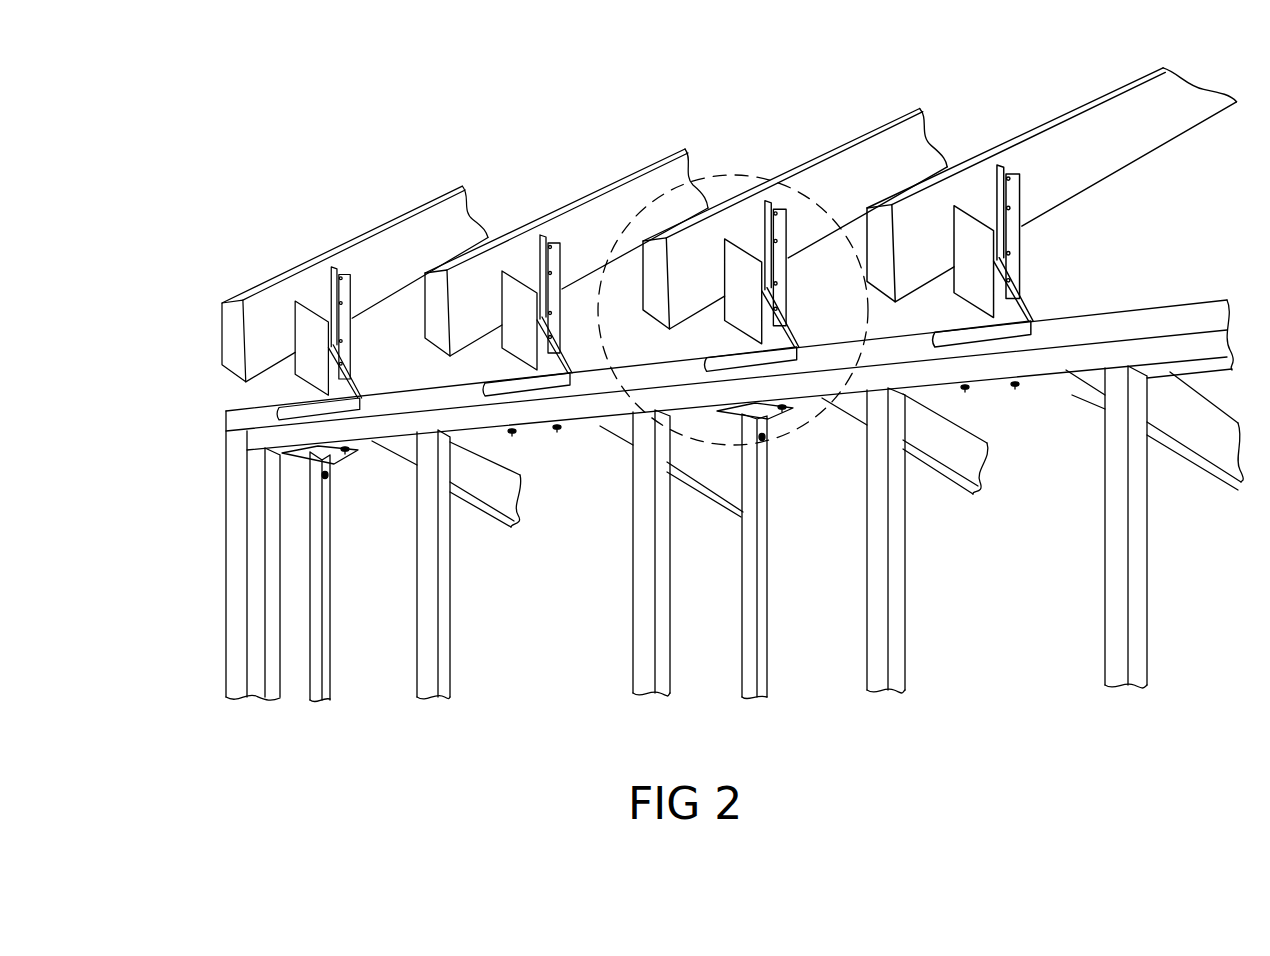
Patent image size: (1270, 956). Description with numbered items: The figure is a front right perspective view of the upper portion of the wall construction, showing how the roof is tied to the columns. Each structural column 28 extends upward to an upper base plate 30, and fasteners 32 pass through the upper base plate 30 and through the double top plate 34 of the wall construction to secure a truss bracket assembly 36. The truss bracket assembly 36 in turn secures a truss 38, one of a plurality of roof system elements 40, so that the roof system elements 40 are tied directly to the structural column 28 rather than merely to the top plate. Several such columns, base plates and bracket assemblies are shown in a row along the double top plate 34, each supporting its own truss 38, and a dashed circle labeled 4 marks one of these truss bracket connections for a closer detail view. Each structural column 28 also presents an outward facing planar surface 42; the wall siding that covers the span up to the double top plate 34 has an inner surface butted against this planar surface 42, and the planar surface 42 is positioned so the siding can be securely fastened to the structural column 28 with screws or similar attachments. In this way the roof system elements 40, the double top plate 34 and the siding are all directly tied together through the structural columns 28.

The detail view circle (FIG. 4) 4 is at (630, 195).
The structural column 28 is at (327, 577).
The upper base plate 30 is at (318, 447).
The fasteners 32 is at (329, 477).
The double top plate 34 is at (240, 425).
The truss bracket assembly 36 is at (330, 376).
The truss 38 is at (230, 316).
The roof system elements 40 is at (318, 167).
The outward facing planar surface 42 is at (302, 692).